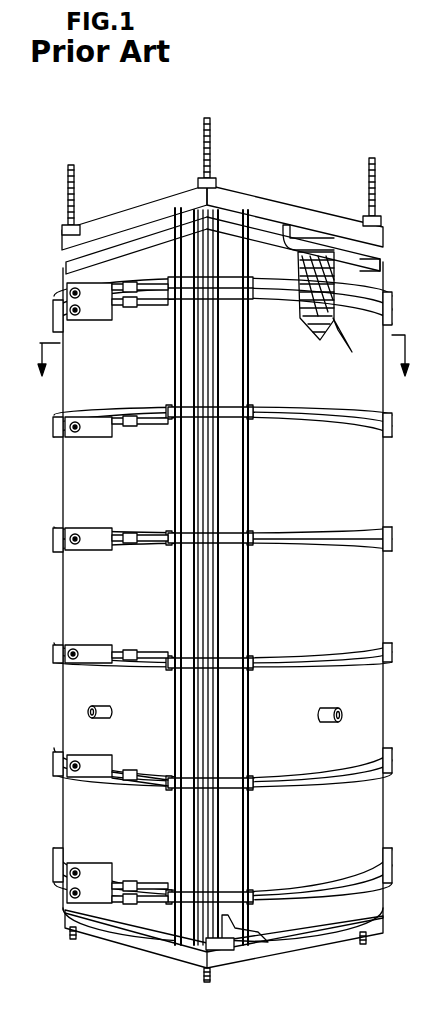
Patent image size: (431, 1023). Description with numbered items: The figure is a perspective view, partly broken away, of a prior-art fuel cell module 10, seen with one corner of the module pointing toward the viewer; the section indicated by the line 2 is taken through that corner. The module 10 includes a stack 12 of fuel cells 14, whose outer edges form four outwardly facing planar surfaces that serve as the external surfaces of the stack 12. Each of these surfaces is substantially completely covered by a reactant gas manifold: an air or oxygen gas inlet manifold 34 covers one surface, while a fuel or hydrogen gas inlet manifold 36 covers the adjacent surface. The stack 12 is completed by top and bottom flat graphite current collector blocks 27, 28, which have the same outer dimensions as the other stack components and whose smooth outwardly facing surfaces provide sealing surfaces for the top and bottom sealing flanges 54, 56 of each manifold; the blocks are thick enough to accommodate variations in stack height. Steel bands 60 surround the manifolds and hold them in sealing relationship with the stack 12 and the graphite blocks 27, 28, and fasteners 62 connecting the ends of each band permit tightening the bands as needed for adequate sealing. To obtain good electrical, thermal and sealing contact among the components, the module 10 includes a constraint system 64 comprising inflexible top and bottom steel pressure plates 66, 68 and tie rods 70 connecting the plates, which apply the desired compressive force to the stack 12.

The fuel cell module 10 is at (90, 149).
The stack 12 is at (335, 273).
The fuel cell 14 is at (349, 350).
The top current collector block 27 is at (330, 246).
The bottom current collector block 28 is at (226, 950).
The air inlet manifold 34 is at (340, 455).
The fuel inlet manifold 36 is at (108, 476).
The top sealing flange 54 is at (294, 245).
The bottom sealing flange 56 is at (226, 928).
The steel band 60 is at (238, 662).
The fastener 62 is at (86, 650).
The constraint system 64 is at (243, 190).
The top pressure plate 66 is at (135, 215).
The bottom pressure plate 68 is at (160, 950).
The tie rod 70 is at (209, 132).
The section line 2- 2 is at (223, 369).